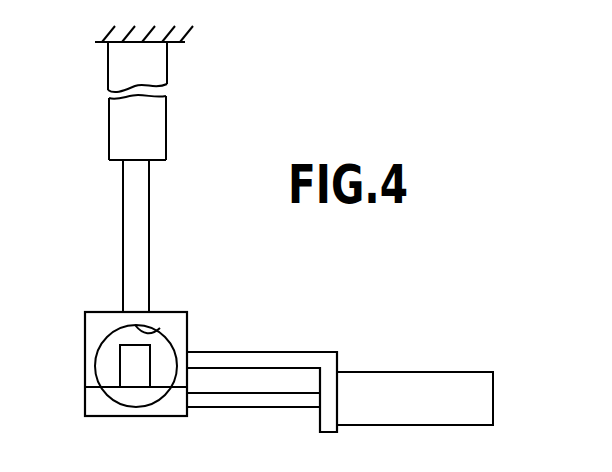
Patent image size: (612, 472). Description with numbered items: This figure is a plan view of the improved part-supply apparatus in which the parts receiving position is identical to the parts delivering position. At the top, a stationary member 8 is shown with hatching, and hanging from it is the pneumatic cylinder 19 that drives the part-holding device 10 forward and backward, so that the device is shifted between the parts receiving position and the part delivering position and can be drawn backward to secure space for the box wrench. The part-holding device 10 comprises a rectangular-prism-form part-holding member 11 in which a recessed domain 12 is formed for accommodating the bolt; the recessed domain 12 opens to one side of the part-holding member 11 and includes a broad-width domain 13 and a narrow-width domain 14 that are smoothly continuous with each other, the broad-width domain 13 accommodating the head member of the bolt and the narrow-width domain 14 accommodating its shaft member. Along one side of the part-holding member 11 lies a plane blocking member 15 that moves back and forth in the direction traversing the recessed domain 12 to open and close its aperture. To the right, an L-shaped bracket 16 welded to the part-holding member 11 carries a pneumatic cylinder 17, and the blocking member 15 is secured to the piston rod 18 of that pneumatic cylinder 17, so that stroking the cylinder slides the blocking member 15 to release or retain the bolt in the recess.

The stationary member 8 is at (150, 43).
The pneumatic cylinder 19 is at (167, 127).
The part-holding device 10 is at (124, 306).
The part-holding member 11 is at (84, 330).
The recessed domain 12 is at (165, 347).
The broad-width domain 13 is at (157, 336).
The narrow-width domain 14 is at (118, 372).
The blocking member 15 is at (98, 418).
The L-shaped bracket 16 is at (282, 351).
The pneumatic cylinder 17 is at (427, 371).
The piston rod 18 is at (222, 410).